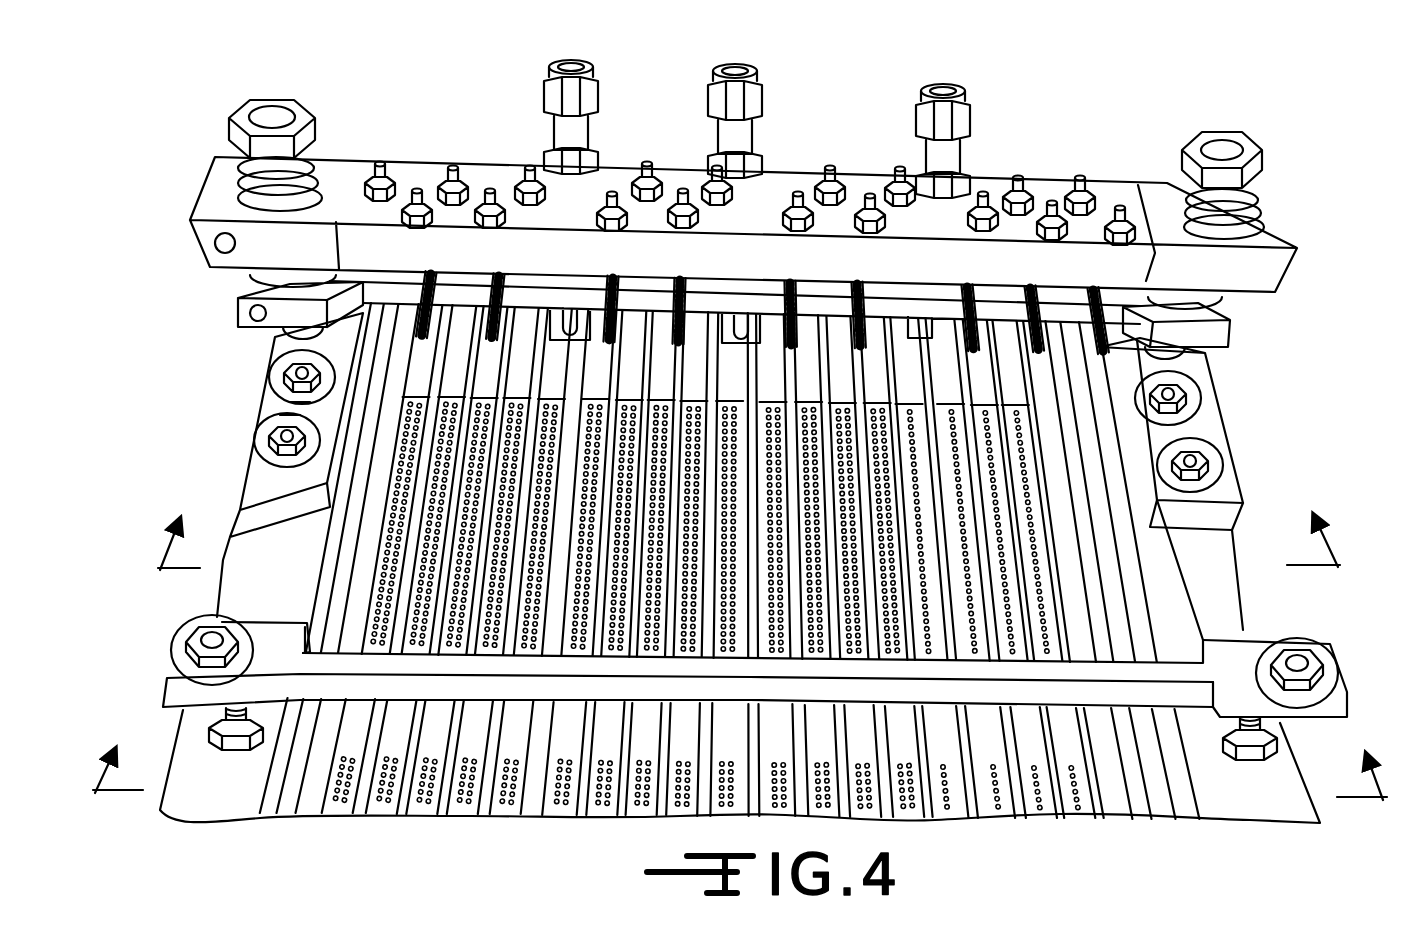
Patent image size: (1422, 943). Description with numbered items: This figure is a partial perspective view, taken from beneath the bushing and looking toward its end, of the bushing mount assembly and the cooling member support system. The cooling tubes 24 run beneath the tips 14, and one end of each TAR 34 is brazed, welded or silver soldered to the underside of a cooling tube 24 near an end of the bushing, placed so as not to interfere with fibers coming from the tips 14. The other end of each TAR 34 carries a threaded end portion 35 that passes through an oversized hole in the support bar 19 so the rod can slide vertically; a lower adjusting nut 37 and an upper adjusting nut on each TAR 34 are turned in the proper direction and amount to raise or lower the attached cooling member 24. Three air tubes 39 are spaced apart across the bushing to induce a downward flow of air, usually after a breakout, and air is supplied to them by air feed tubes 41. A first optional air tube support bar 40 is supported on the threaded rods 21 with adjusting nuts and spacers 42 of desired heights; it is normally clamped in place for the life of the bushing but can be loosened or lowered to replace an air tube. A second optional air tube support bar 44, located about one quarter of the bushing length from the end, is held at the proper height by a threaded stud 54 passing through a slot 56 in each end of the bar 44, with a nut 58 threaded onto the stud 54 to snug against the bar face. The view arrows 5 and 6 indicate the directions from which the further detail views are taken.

The tips 14 is at (390, 557).
The support bar 19 is at (1268, 225).
The threaded rods 21 is at (277, 117).
The cooling tube 24 is at (1130, 563).
The TAR 34 is at (488, 294).
The threaded end portion 35 is at (1125, 207).
The lower adjusting nut 37 is at (1048, 200).
The air tube 39 is at (570, 312).
The first air tube support bar 40 is at (1207, 337).
The air feed tubes 41 is at (588, 130).
The spacers 42 is at (277, 273).
The second air tube support bar 44 is at (1225, 657).
The threaded stud 54 is at (1262, 735).
The slot 56 is at (1330, 693).
The nut 58 is at (1287, 647).
The section line 5- 5 is at (750, 556).
The section line 6- 6 is at (742, 793).